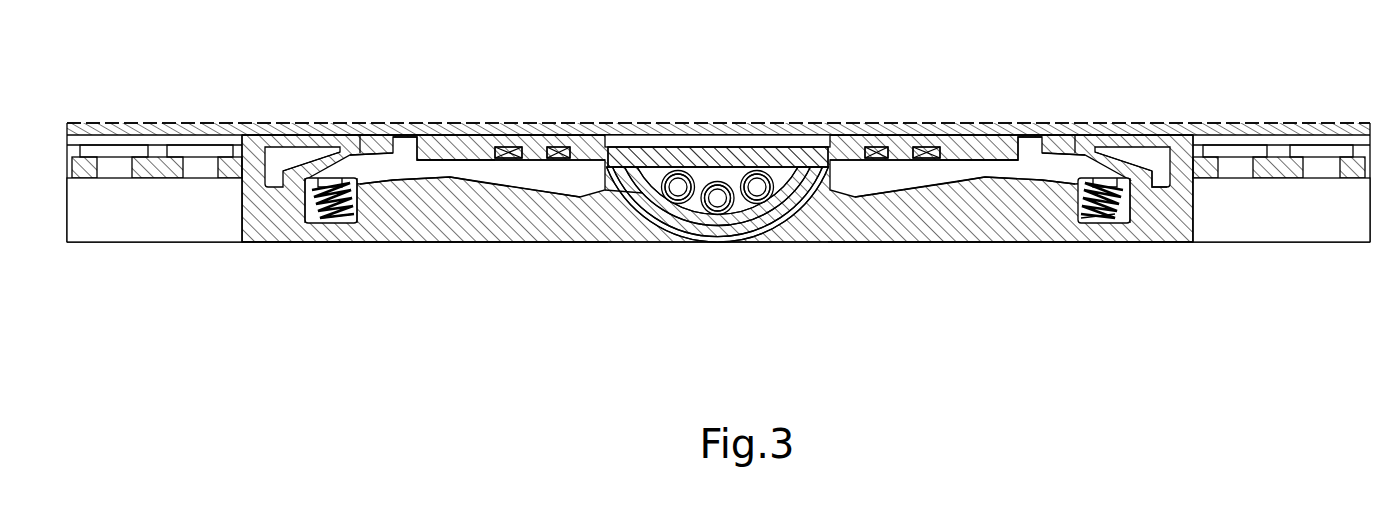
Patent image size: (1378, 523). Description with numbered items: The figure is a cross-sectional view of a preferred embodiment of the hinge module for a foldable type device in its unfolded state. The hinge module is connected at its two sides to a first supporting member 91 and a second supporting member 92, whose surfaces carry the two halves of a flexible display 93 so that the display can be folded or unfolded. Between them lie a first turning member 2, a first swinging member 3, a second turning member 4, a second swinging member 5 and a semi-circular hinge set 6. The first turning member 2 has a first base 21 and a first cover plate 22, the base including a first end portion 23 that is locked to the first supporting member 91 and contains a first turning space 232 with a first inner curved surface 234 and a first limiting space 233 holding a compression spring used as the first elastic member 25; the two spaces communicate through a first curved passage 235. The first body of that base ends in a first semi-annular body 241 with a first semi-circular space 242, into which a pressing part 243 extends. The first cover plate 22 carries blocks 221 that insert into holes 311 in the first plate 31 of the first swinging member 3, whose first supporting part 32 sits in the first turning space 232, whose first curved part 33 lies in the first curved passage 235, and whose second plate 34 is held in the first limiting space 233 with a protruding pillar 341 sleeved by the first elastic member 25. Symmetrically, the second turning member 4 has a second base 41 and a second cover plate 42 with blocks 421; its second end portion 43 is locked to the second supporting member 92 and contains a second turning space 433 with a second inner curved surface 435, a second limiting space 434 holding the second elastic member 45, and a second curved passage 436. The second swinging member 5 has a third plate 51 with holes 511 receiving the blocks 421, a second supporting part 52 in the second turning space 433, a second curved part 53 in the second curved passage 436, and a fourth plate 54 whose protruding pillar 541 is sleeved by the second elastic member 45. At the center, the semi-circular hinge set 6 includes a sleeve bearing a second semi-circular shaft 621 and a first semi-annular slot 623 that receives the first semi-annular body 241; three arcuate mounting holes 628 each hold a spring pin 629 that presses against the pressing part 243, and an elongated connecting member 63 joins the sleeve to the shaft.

The first turning member 2 is at (555, 343).
The first base 21 is at (563, 244).
The first cover plate 22 is at (615, 123).
The blocks 221 is at (535, 123).
The first end portion 23 is at (530, 225).
The first turning space 232 is at (415, 205).
The first limiting space 233 is at (247, 123).
The first inner curved surface 234 is at (417, 123).
The first curved passage 235 is at (365, 200).
The first semi-annular body 241 is at (708, 215).
The first semi-circular space 242 is at (645, 195).
The pressing part 243 is at (740, 225).
The first elastic member 25 is at (330, 215).
The first swinging member 3 is at (433, 123).
The first plate 31 is at (518, 123).
The holes 311 is at (492, 123).
The first supporting part 32 is at (445, 195).
The first curved part 33 is at (380, 200).
The second plate 34 is at (295, 123).
The protruding pillar 341 is at (298, 228).
The second turning member 4 is at (880, 343).
The second base 41 is at (870, 244).
The second cover plate 42 is at (832, 123).
The blocks 421 is at (902, 123).
The second end portion 43 is at (920, 225).
The second turning space 433 is at (1020, 210).
The second limiting space 434 is at (1193, 123).
The second inner curved surface 435 is at (1018, 123).
The second curved passage 436 is at (1090, 123).
The second elastic member 45 is at (1103, 215).
The second swinging member 5 is at (1003, 123).
The third plate 51 is at (935, 195).
The holes 511 is at (923, 123).
The second supporting part 52 is at (990, 200).
The second curved part 53 is at (1060, 195).
The fourth plate 54 is at (1142, 123).
The protruding pillar 541 is at (1140, 228).
The semi-circular hinge set 6 is at (755, 148).
The second semi-circular shaft 621 is at (765, 215).
The first semi-annular slot 623 is at (645, 195).
The mounting holes 628 is at (642, 123).
The spring pin 629 is at (693, 123).
The connecting member 63 is at (797, 225).
The first supporting member 91 is at (152, 232).
The second supporting member 92 is at (1283, 232).
The flexible display 93 is at (1287, 123).